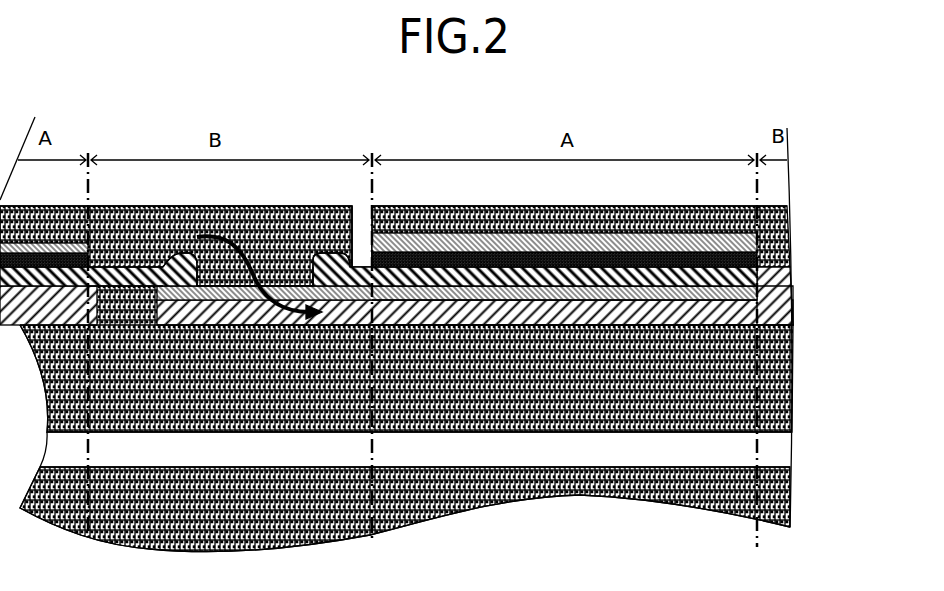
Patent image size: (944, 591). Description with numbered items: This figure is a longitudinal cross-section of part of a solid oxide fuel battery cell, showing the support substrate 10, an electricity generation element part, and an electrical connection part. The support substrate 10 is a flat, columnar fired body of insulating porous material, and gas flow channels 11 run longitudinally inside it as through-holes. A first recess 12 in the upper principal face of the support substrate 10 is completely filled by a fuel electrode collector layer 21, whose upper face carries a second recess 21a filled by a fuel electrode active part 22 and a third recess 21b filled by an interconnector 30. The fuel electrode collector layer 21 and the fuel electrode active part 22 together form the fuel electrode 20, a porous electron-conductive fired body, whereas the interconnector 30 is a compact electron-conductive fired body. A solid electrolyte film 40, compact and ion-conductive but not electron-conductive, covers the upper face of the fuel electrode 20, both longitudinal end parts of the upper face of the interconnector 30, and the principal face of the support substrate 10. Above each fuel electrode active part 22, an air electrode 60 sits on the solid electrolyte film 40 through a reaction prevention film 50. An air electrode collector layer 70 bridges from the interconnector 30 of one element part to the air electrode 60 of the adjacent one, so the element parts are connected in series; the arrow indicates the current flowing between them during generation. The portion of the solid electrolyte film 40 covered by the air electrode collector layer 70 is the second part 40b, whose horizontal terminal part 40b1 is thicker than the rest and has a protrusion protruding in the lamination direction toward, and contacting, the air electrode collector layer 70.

The support substrate 10 is at (785, 408).
The gas flow channel 11 is at (712, 455).
The first recess 12 is at (793, 326).
The fuel electrode 20 is at (865, 232).
The fuel electrode collector layer 21 is at (792, 297).
The second recess 21a is at (567, 297).
The third recess 21b is at (233, 283).
The fuel electrode active part 22 is at (790, 251).
The interconnector 30 is at (281, 283).
The solid electrolyte film 40 is at (555, 280).
The second part 40b is at (128, 262).
The terminal part 40b1 is at (185, 252).
The reaction prevention film 50 is at (540, 262).
The air electrode 60 is at (485, 244).
The air electrode collector layer 70 is at (50, 223).